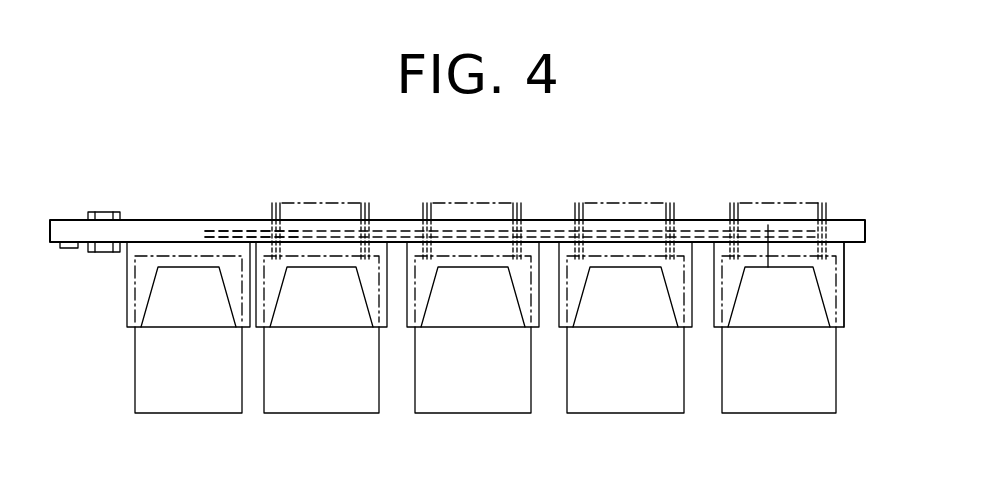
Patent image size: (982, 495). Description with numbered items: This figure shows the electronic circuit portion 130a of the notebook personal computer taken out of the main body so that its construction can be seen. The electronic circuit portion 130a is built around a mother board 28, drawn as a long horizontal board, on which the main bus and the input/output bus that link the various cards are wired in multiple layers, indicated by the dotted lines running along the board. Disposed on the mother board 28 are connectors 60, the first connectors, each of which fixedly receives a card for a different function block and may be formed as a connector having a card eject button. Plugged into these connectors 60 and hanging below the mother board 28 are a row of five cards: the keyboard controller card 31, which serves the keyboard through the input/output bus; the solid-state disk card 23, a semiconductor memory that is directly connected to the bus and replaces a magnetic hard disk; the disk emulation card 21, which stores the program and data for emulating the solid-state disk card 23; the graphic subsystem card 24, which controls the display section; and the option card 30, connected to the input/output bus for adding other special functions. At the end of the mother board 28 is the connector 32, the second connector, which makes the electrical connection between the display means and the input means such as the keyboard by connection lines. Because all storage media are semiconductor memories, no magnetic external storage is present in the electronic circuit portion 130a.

The electronic circuit portion 130a is at (842, 220).
The connector 32 is at (55, 260).
The mother board 28 is at (247, 232).
The connectors 60 is at (847, 288).
The keyboard controller card 31 is at (190, 413).
The solid-state disk card 23 is at (328, 413).
The disk emulation card 21 is at (477, 413).
The graphic subsystem card 24 is at (627, 413).
The option card 30 is at (782, 413).